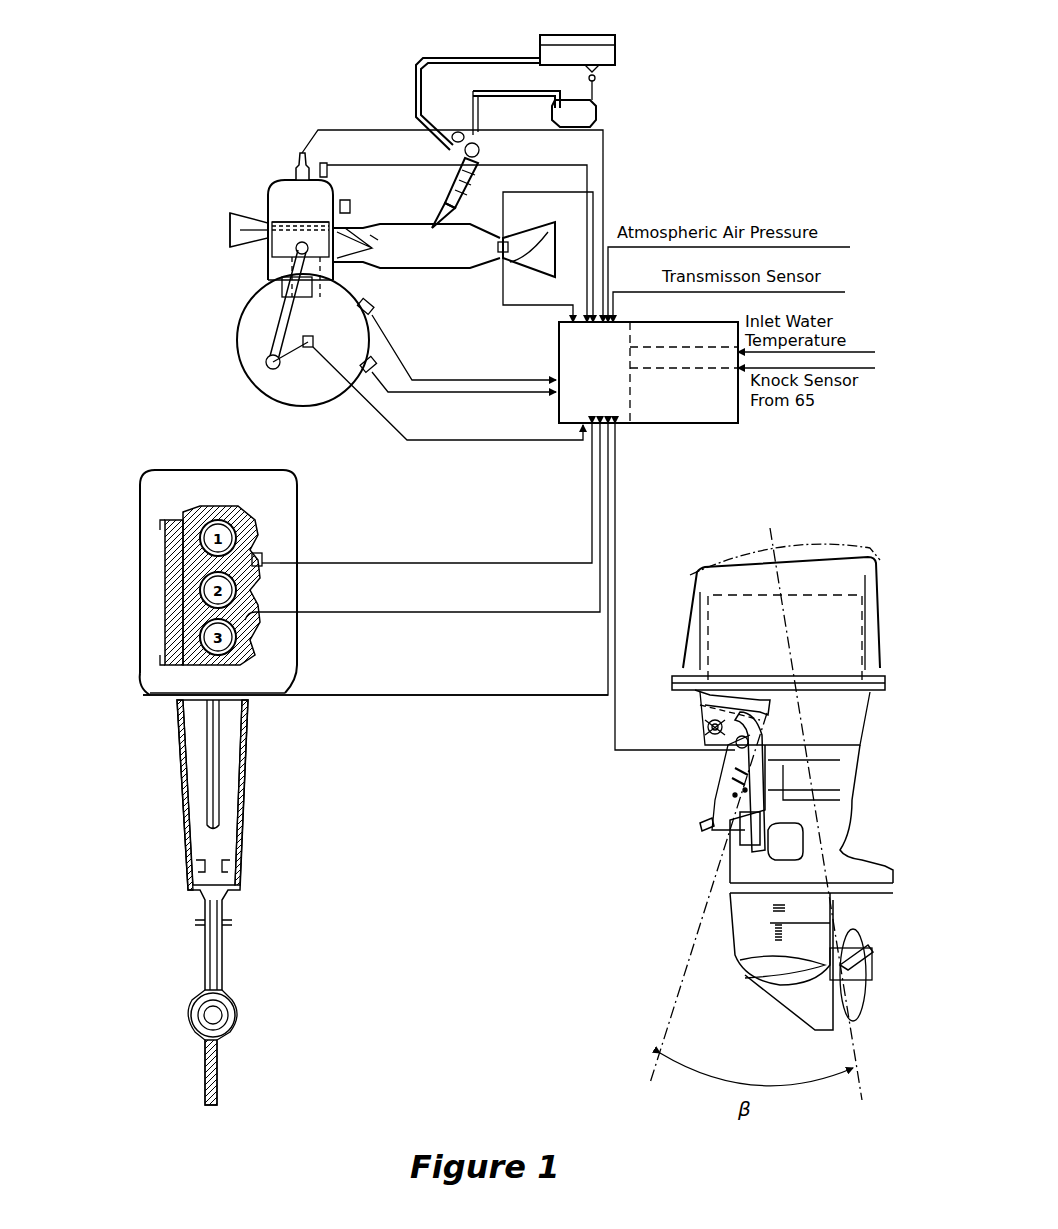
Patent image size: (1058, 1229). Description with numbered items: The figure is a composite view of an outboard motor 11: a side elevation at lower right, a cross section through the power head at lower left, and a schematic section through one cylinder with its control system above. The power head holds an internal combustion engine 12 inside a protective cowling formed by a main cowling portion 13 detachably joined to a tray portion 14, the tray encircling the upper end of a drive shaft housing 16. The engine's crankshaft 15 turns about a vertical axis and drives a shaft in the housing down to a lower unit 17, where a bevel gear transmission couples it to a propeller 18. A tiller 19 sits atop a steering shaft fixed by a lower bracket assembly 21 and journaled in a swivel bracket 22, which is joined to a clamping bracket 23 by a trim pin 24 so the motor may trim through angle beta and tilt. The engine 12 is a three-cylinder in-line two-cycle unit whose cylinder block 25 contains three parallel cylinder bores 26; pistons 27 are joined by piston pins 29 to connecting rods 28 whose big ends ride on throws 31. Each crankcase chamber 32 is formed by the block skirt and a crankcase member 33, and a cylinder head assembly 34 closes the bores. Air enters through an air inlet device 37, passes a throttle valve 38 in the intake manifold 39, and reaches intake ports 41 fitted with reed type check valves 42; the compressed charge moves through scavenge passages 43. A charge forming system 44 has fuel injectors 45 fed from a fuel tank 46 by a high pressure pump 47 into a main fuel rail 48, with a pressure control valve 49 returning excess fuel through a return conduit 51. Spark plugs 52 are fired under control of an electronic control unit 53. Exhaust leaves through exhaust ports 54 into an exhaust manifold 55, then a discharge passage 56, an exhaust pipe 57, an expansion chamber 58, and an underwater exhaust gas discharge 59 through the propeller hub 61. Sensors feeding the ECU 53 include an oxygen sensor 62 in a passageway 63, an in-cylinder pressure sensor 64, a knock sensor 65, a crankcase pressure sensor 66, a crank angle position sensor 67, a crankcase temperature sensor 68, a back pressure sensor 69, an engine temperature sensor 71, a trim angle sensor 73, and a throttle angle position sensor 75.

The outboard motor 11 is at (148, 450).
The internal combustion engine 12 is at (222, 143).
The main cowling portion 13 is at (140, 490).
The tray portion 14 is at (300, 692).
The crankshaft 15 is at (300, 338).
The drive shaft housing 16 is at (243, 848).
The lower unit 17 is at (240, 958).
The propeller 18 is at (875, 985).
The tiller 19 is at (700, 698).
The lower bracket assembly 21 is at (780, 820).
The swivel bracket 22 is at (748, 830).
The clamping bracket 23 is at (730, 790).
The trim pin 24 is at (708, 727).
The cylinder block 25 is at (273, 262).
The cylinder bores 26 is at (267, 198).
The pistons 27 is at (280, 263).
The connecting rods 28 is at (277, 333).
The piston pins 29 is at (296, 253).
The throws 31 is at (267, 364).
The crankcase chamber 32 is at (293, 364).
The crankcase member 33 is at (270, 398).
The cylinder head assembly 34 is at (283, 173).
The air inlet device 37 is at (528, 228).
The throttle valve 38 is at (523, 263).
The intake manifold 39 is at (443, 275).
The intake ports 41 is at (359, 262).
The reed type check valves 42 is at (406, 259).
The scavenge passages 43 is at (307, 218).
The charge forming system 44 is at (653, 68).
The fuel injectors 45 is at (473, 192).
The fuel tank 46 is at (578, 35).
The high pressure pump 47 is at (575, 103).
The main fuel rail 48 is at (485, 150).
The pressure control valve 49 is at (457, 132).
The return conduit 51 is at (434, 55).
The spark plugs 52 is at (302, 150).
The electronic control unit 53 is at (710, 424).
The exhaust ports 54 is at (230, 222).
The exhaust manifold 55 is at (243, 240).
The exhaust discharge passage 56 is at (178, 705).
The exhaust pipe 57 is at (212, 848).
The expansion chamber 58 is at (210, 872).
The underwater exhaust gas discharge 59 is at (202, 1024).
The hub 61 is at (873, 950).
The oxygen sensor 62 is at (262, 548).
The passageway 63 is at (262, 580).
The in-cylinder pressure sensor 64 is at (330, 162).
The knock sensor 65 is at (377, 237).
The pressure sensor 66 is at (375, 306).
The crank angle position sensor 67 is at (312, 362).
The crankcase temperature sensor 68 is at (366, 378).
The back pressure sensor 69 is at (248, 715).
The engine temperature sensor 71 is at (262, 615).
The trim angle sensor 73 is at (748, 750).
The throttle angle position sensor 75 is at (498, 245).